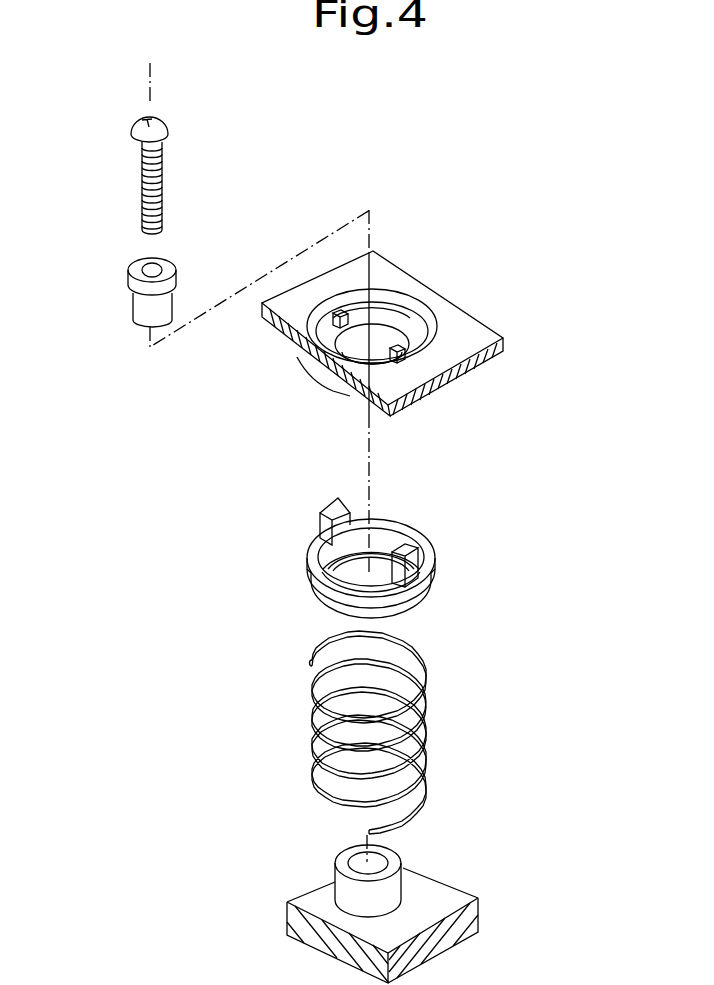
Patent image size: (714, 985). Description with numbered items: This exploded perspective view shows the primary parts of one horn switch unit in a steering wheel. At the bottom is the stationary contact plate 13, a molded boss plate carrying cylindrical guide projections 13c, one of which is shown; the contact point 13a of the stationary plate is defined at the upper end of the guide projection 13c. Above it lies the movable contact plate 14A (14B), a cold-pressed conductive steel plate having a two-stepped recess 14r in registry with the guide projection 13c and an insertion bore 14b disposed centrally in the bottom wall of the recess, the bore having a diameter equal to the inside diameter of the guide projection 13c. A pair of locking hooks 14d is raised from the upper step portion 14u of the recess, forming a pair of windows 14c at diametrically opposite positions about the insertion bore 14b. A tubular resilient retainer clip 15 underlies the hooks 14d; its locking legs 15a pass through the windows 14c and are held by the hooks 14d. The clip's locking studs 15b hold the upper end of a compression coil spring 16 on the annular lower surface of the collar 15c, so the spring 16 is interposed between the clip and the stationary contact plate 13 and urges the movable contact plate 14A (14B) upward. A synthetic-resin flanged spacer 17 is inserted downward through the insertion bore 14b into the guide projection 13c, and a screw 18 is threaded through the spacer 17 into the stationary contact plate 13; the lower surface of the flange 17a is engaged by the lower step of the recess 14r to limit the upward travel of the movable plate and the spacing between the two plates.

The stationary contact plate 13 is at (397, 883).
The contact point 13a is at (314, 850).
The guide projection 13c is at (345, 893).
The movable contact plate 14A is at (421, 316).
The movable contact plate 14B is at (421, 316).
The insertion bore 14b is at (377, 358).
The window 14c is at (330, 318).
The locking projection or hook 14d is at (302, 362).
The two-stepped recess 14r is at (380, 306).
The upper step portion 14u is at (490, 332).
The retainer clip 15 is at (388, 568).
The locking leg 15a is at (330, 505).
The locking stud 15b is at (320, 595).
The collar 15c is at (320, 570).
The compression coil spring 16 is at (423, 653).
The flanged spacer 17 is at (110, 277).
The flange 17a is at (138, 262).
The screw 18 is at (132, 130).